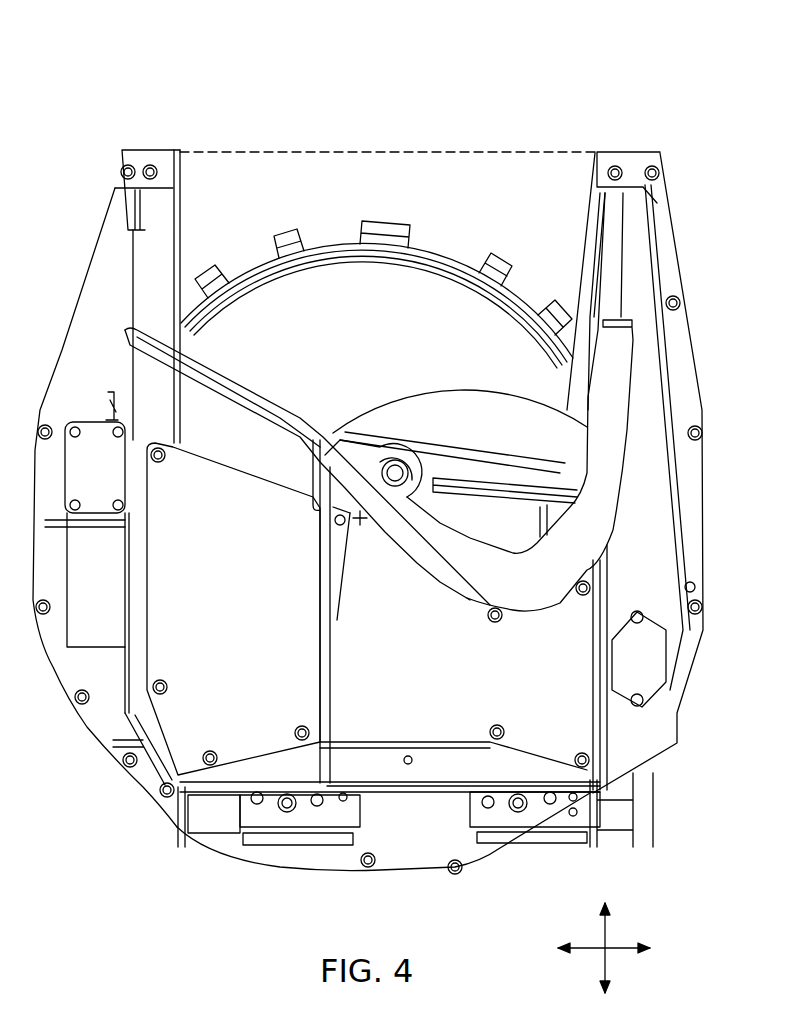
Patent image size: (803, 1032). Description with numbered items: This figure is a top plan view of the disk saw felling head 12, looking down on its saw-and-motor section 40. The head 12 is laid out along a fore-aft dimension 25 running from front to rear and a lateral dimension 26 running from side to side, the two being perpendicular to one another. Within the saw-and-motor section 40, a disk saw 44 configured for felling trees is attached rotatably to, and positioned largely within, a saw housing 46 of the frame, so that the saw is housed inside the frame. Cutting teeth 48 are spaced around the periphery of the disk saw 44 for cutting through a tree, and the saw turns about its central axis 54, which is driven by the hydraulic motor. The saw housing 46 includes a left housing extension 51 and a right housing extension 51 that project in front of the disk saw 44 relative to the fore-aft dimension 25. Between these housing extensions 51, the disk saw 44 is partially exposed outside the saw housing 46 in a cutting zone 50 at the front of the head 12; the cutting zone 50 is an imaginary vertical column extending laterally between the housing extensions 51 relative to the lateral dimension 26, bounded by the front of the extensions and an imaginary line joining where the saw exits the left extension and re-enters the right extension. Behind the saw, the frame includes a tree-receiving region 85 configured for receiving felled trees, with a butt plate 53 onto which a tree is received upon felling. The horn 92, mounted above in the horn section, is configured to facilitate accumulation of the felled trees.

The head 12 is at (235, 106).
The fore-aft dimension 25 is at (607, 965).
The lateral dimension 26 is at (613, 943).
The saw-and-motor section 40 is at (687, 325).
The disk saw 44 is at (290, 228).
The saw housing 46 is at (50, 350).
The cutting teeth 48 is at (495, 250).
The cutting zone 50 is at (377, 150).
The housing extensions 51 is at (115, 185).
The butt plate 53 is at (273, 355).
The central axis 54 is at (358, 522).
The tree-receiving region 85 is at (371, 368).
The horn 92 is at (627, 400).